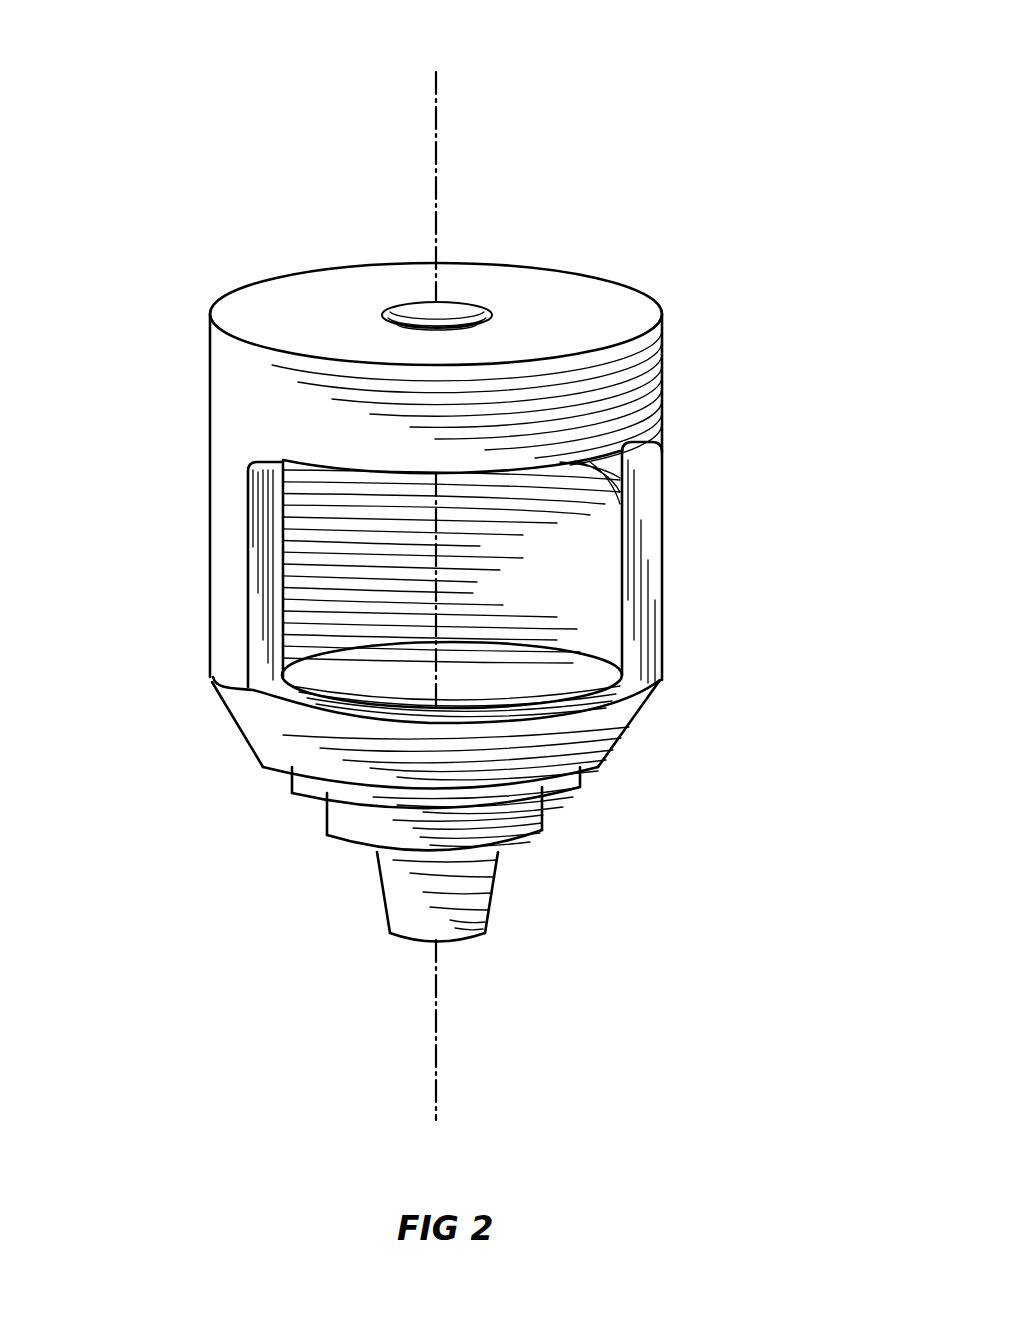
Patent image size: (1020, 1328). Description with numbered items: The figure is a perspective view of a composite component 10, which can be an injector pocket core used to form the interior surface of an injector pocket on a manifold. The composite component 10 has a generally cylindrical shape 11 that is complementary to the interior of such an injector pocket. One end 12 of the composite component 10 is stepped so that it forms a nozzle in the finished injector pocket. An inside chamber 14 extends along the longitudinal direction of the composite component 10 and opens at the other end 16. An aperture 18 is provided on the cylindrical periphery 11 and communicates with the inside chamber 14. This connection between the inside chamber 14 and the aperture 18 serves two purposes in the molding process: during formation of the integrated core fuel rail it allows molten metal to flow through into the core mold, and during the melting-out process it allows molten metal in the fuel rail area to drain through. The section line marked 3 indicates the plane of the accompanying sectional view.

The composite component 10 is at (718, 120).
The other end 16 is at (643, 365).
The cylindrical shape 11 is at (222, 545).
The aperture 18 is at (647, 528).
The inside chamber 14 is at (565, 590).
The one end 12 is at (580, 791).
The section line 3- 3 is at (436, 212).